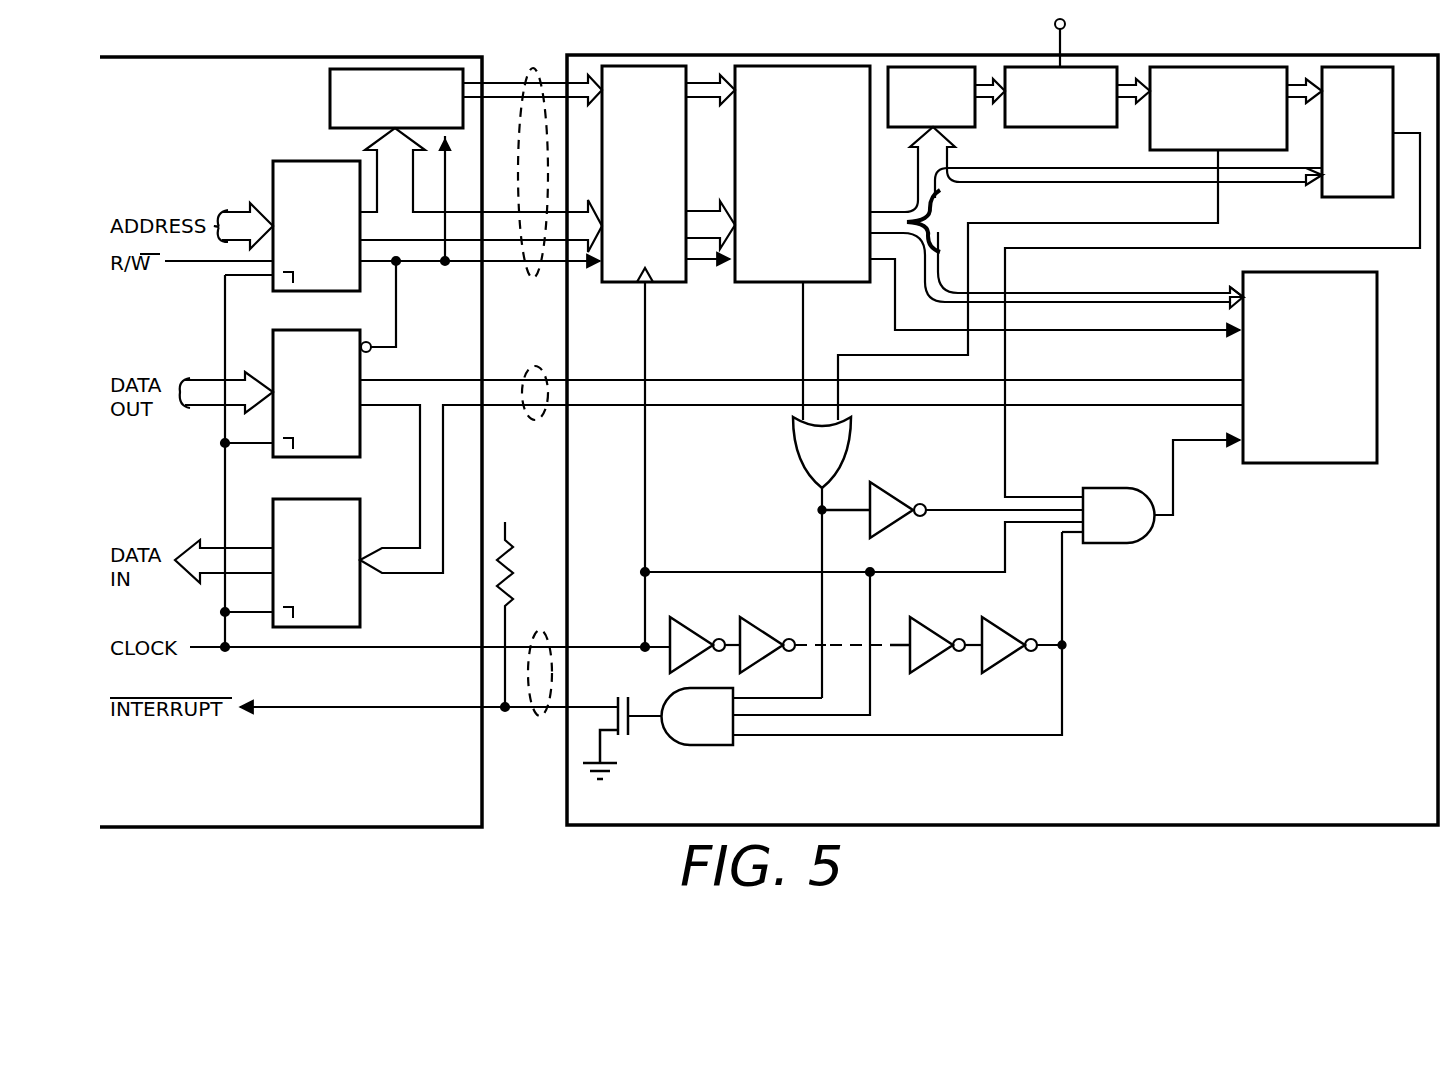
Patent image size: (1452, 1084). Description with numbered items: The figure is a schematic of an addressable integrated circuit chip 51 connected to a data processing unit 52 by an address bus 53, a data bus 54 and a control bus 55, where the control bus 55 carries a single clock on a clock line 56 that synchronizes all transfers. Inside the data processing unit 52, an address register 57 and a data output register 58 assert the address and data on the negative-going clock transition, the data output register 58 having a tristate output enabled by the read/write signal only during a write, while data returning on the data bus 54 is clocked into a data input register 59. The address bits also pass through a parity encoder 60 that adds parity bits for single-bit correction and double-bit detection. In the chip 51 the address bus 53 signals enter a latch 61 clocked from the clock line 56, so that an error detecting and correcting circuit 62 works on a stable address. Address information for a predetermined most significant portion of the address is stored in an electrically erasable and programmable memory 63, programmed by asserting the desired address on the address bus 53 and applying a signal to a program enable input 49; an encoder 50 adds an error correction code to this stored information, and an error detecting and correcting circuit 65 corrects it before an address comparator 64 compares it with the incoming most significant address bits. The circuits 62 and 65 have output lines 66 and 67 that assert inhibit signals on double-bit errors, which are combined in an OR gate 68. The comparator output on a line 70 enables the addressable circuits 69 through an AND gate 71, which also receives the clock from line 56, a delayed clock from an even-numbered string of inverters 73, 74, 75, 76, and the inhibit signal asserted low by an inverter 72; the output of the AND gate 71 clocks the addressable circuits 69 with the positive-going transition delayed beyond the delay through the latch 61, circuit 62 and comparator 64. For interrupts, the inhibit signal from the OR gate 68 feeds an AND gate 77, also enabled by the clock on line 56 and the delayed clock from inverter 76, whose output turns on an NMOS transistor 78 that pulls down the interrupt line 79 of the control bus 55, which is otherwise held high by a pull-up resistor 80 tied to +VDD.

The program enable input 49 is at (1052, 44).
The encoder 50 is at (975, 126).
The addressable integrated circuit chip 51 is at (908, 828).
The data processing unit 52 is at (355, 830).
The address bus 53 is at (530, 280).
The data bus 54 is at (530, 420).
The control bus 55 is at (536, 717).
The clock line 56 is at (492, 645).
The address register 57 is at (305, 161).
The data output register 58 is at (305, 330).
The data input register 59 is at (305, 499).
The parity encoder 60 is at (330, 100).
The latch 61 is at (670, 283).
The error detecting and correcting circuit 62 is at (826, 283).
The electrically erasable and programmable memory 63 is at (1075, 67).
The address comparator 64 is at (1368, 197).
The error detecting and correcting circuit 65 is at (1150, 136).
The output line 66 is at (802, 354).
The output line 67 is at (1170, 222).
The OR gate 68 is at (797, 462).
The addressable circuits 69 is at (1290, 465).
The line 70 is at (1170, 249).
The AND gate 71 is at (1110, 545).
The inverter 72 is at (892, 495).
The inverter 73 is at (692, 625).
The inverter 74 is at (764, 625).
The inverter 75 is at (934, 625).
The inverter 76 is at (1007, 625).
The AND gate 77 is at (700, 746).
The NMOS transistor 78 is at (635, 735).
The interrupt line 79 is at (495, 706).
The pull-up resistor 80 is at (522, 606).